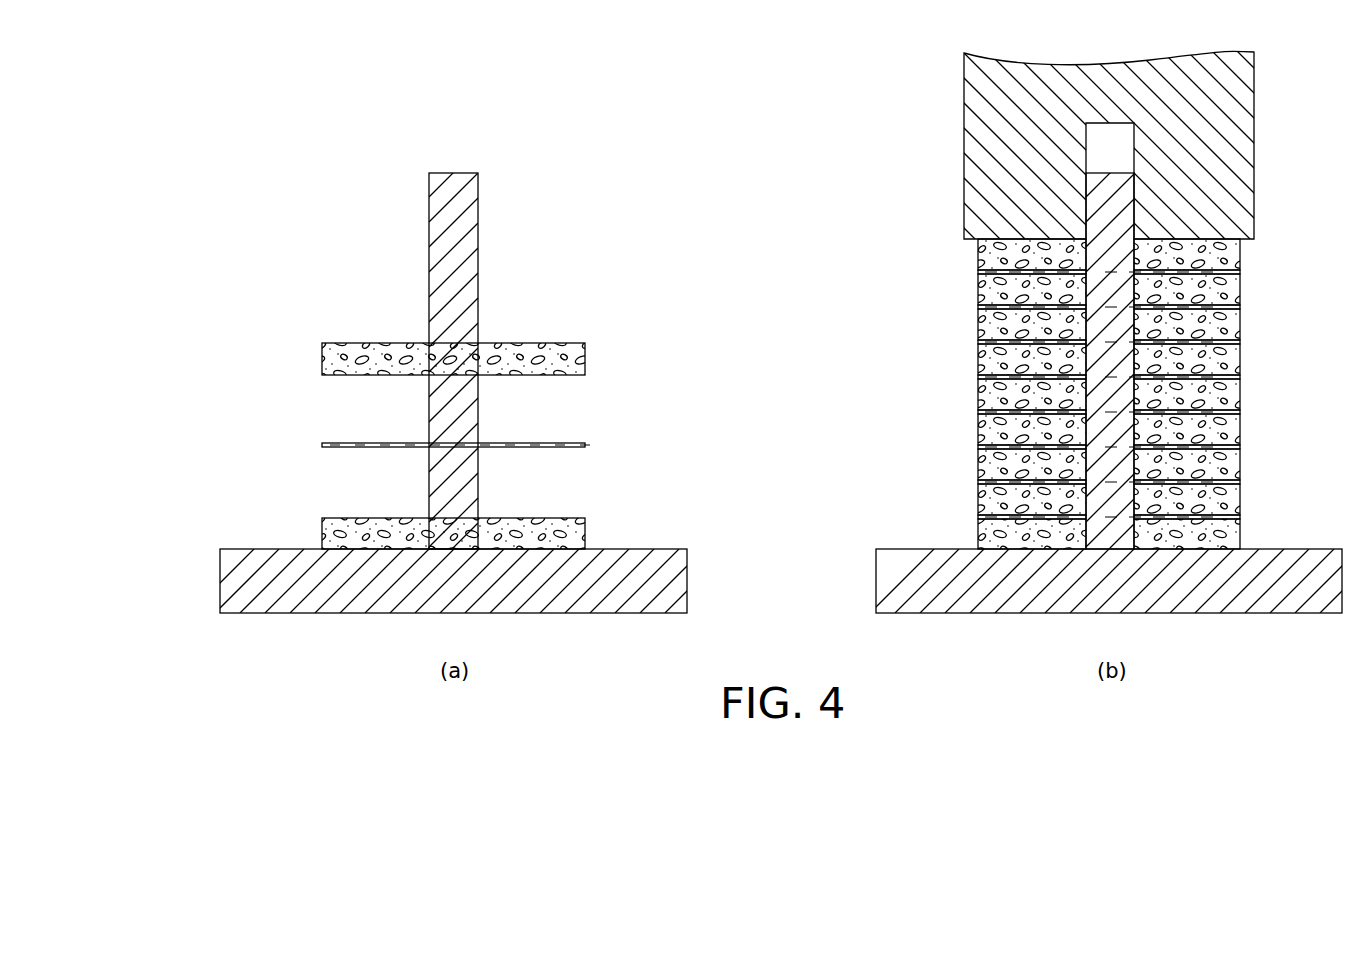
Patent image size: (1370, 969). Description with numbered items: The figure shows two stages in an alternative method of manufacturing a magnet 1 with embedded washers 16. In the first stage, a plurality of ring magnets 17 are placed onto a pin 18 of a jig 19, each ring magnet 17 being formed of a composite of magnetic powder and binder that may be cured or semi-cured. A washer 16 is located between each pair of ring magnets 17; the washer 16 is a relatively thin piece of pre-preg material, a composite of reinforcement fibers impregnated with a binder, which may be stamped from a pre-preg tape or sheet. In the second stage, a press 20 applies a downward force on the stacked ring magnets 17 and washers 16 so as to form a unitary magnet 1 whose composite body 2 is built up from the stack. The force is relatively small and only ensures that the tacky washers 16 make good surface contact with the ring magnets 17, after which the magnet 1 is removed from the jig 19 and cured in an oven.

The magnet 1 is at (1074, 394).
The composite body 2 is at (978, 425).
The washer 16 is at (585, 445).
The ring magnet 17 is at (585, 356).
The pin 18 is at (478, 213).
The jig 19 is at (280, 613).
The press 20 is at (1254, 143).